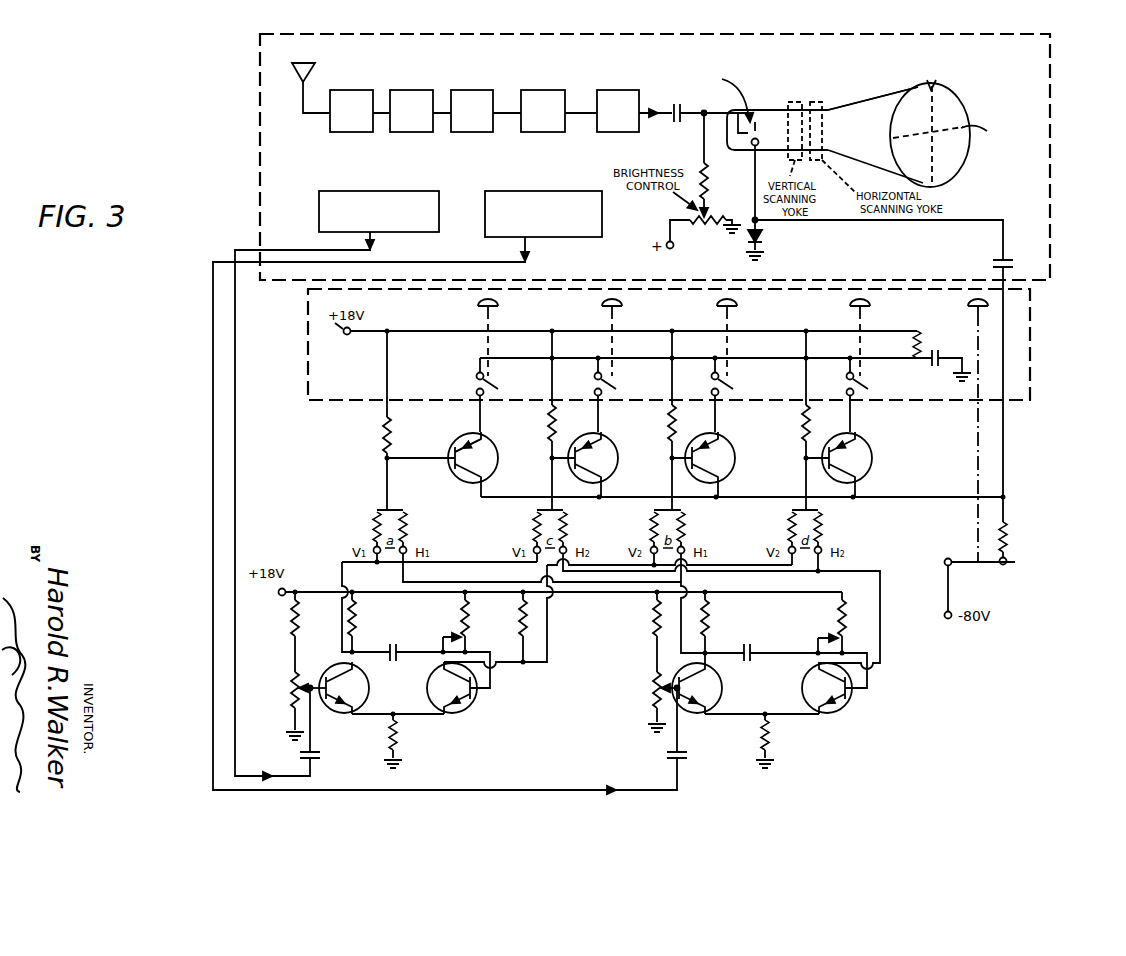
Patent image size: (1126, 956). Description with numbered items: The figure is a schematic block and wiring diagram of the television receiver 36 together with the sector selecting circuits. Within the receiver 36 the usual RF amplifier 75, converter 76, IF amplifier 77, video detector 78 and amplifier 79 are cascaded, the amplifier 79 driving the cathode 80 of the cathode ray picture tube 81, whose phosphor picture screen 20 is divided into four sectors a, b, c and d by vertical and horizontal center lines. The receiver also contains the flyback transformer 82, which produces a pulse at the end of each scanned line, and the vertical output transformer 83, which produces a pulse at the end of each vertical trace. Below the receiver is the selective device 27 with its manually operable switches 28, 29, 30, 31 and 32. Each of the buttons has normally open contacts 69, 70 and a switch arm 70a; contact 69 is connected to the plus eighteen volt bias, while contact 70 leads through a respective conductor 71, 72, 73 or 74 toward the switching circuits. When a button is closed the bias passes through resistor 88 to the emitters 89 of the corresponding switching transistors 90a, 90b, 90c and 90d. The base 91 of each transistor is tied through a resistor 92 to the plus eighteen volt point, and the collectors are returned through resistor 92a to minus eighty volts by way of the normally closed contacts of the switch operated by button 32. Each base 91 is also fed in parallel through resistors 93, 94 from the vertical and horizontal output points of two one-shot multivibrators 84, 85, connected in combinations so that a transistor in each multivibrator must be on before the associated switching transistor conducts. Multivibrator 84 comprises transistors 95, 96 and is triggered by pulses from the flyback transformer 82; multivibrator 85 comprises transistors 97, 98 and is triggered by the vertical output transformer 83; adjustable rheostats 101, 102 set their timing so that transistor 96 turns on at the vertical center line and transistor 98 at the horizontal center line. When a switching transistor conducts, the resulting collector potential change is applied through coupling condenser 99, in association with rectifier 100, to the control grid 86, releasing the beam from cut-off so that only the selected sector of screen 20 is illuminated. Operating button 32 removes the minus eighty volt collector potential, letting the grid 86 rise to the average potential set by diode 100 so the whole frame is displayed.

The screen 20 is at (966, 106).
The selective device 27 is at (1032, 340).
The manually operable switch 28 is at (478, 305).
The manually operable switch 29 is at (602, 305).
The manually operable switch 30 is at (717, 305).
The manually operable switch 31 is at (850, 305).
The manually operable switch 32 is at (968, 305).
The television receiver 36 is at (1050, 183).
The contact 69 is at (476, 372).
The contact 70 is at (476, 391).
The switch arm 70a is at (491, 385).
The conductor 71 is at (478, 415).
The conductor 72 is at (599, 415).
The conductor 73 is at (717, 415).
The conductor 74 is at (852, 415).
The RF amplifier 75 is at (352, 90).
The converter 76 is at (408, 90).
The IF amplifier 77 is at (464, 90).
The video detector 78 is at (532, 90).
The amplifier 79 is at (612, 90).
The cathode 80 is at (739, 96).
The cathode ray picture tube 81 is at (884, 80).
The flyback transformer 82 is at (355, 191).
The vertical output transformer 83 is at (513, 191).
The one-shot multivibrator 84 is at (406, 680).
The one-shot multivibrator 85 is at (768, 680).
The control grid 86 is at (761, 120).
The resistor 88 is at (925, 346).
The emitter 89 is at (482, 452).
The switching transistor 90a is at (460, 464).
The switching transistor 90b is at (734, 477).
The switching transistor 90c is at (617, 477).
The switching transistor 90d is at (871, 477).
The base 91 is at (449, 470).
The resistor 92 is at (385, 470).
The resistor 92a is at (1012, 541).
The resistor 93 is at (788, 528).
The resistor 94 is at (827, 528).
The transistor 95 is at (365, 688).
The transistor 96 is at (477, 704).
The transistor 97 is at (723, 688).
The transistor 98 is at (853, 708).
The coupling condenser 99 is at (998, 262).
The rectifier 100 is at (763, 240).
The adjustable rheostat 101 is at (458, 630).
The adjustable rheostat 102 is at (834, 636).